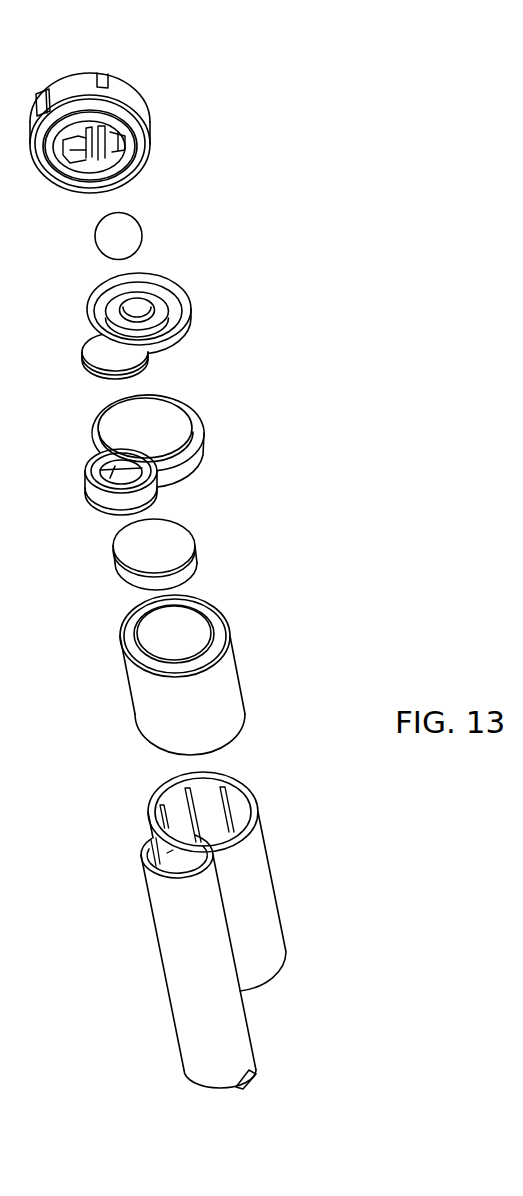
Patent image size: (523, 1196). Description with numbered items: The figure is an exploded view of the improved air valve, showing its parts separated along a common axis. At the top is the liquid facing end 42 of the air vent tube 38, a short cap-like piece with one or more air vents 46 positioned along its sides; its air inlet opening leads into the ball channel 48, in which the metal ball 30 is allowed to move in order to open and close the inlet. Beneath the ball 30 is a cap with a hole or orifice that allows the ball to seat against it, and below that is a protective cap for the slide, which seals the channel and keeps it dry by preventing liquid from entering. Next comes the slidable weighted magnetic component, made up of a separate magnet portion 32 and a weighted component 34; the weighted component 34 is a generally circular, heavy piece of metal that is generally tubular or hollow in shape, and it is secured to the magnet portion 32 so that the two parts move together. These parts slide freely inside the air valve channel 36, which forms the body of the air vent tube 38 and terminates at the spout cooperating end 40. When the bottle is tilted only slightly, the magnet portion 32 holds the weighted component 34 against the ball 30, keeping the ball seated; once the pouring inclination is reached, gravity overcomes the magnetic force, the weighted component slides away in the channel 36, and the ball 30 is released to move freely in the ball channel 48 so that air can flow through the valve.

The metal ball 30 is at (128, 238).
The magnet portion 32 is at (176, 541).
The weighted component 34 is at (190, 632).
The air valve channel 36 is at (211, 800).
The air vent tube 38 is at (150, 832).
The spout cooperating end 40 is at (262, 1075).
The liquid facing end 42 is at (135, 82).
The air vents 46 is at (104, 75).
The ball channel 48 is at (108, 169).